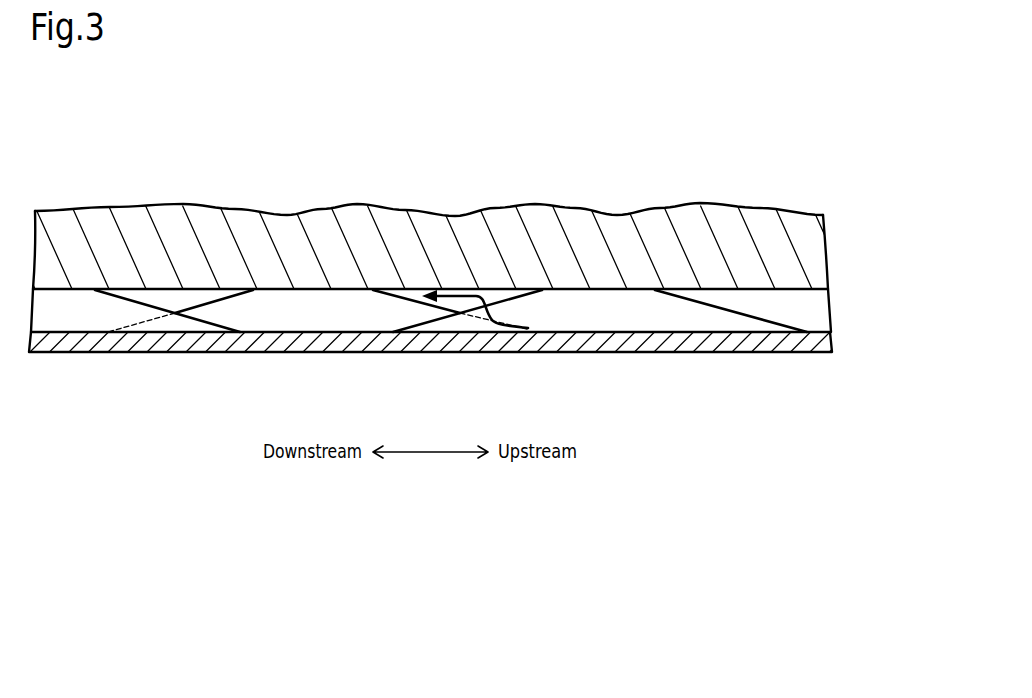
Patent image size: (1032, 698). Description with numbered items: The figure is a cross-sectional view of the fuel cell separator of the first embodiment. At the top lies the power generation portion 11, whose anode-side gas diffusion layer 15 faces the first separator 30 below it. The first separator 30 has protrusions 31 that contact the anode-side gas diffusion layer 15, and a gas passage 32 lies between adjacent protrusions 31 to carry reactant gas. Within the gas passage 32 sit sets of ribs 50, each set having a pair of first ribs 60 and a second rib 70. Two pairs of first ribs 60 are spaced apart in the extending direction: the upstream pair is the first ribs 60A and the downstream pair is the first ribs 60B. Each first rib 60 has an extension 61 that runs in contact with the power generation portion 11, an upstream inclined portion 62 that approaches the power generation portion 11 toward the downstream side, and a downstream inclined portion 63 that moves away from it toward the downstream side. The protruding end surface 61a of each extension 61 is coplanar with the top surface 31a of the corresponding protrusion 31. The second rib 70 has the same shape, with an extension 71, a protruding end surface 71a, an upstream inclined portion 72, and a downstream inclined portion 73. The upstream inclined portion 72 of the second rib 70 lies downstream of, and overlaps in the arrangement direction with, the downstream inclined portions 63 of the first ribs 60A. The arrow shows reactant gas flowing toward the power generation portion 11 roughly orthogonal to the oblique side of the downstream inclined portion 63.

The power generation portion 11 is at (466, 246).
The anode-side gas diffusion layer 15 is at (429, 209).
The first separator 30 is at (789, 352).
The protrusions 31 is at (830, 305).
The top surface 31a is at (708, 289).
The gas passages 32 is at (749, 332).
The ribs 50 is at (430, 250).
The first ribs 60 is at (828, 235).
The first ribs on the upstream side 60A is at (734, 324).
The first ribs on the downstream side 60B is at (152, 305).
The extension 61 is at (45, 313).
The protruding end surface 61a is at (58, 289).
The upstream inclined portion 62 is at (128, 313).
The downstream inclined portion 63 is at (517, 312).
The second rib 70 is at (406, 292).
The extension of the second rib 71 is at (282, 313).
The protruding end surface of the second rib 71a is at (321, 289).
The upstream inclined portion of the second rib 72 is at (387, 313).
The downstream inclined portion of the second rib 73 is at (240, 313).